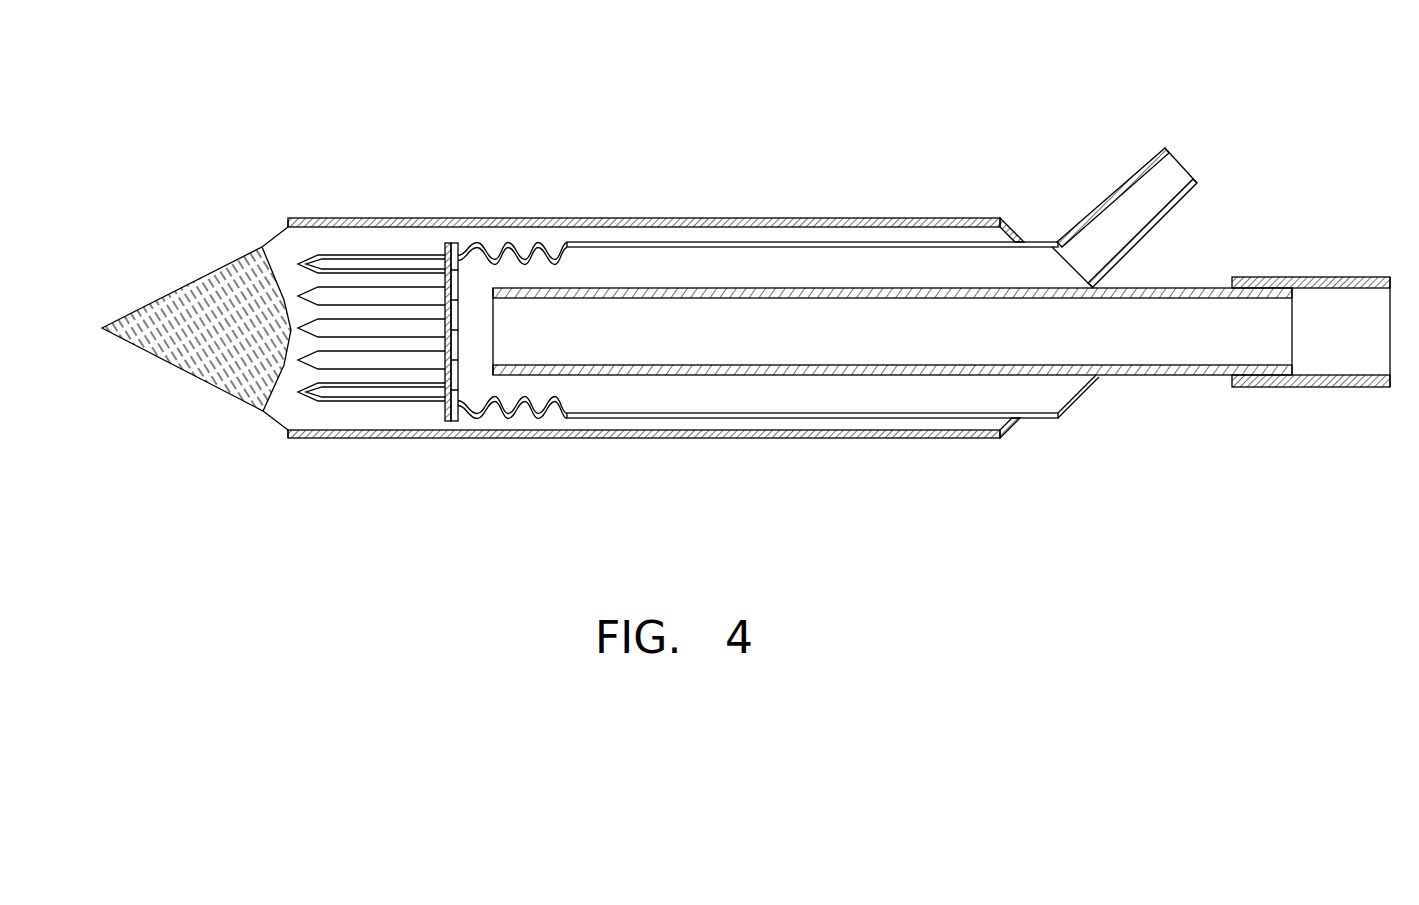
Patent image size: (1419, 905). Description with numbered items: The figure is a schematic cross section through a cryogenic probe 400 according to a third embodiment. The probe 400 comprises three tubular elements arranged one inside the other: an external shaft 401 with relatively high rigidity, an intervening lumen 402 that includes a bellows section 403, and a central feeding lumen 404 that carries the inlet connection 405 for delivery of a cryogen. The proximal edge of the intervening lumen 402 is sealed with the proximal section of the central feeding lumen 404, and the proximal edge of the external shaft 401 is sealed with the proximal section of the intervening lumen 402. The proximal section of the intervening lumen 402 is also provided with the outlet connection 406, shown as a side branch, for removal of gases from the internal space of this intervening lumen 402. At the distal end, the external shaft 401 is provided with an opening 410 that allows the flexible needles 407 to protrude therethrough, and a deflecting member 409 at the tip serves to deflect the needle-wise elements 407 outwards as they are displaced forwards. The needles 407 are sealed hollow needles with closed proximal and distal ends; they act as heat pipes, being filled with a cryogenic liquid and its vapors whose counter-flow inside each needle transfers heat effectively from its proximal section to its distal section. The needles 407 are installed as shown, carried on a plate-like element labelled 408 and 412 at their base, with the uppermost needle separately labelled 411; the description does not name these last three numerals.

The probe 400 is at (785, 178).
The external shaft 401 is at (668, 218).
The intervening lumen 402 is at (617, 414).
The bellows section 403 is at (507, 413).
The central feeding lumen 404 is at (910, 366).
The inlet connection 405 is at (1345, 277).
The outlet connection 406 is at (1117, 192).
The flexible needles 407 is at (370, 400).
The needle hub 408 is at (443, 290).
The deflecting member 409 is at (188, 282).
The opening 410 is at (273, 418).
The needle 411 is at (347, 272).
The plate 412 is at (460, 300).